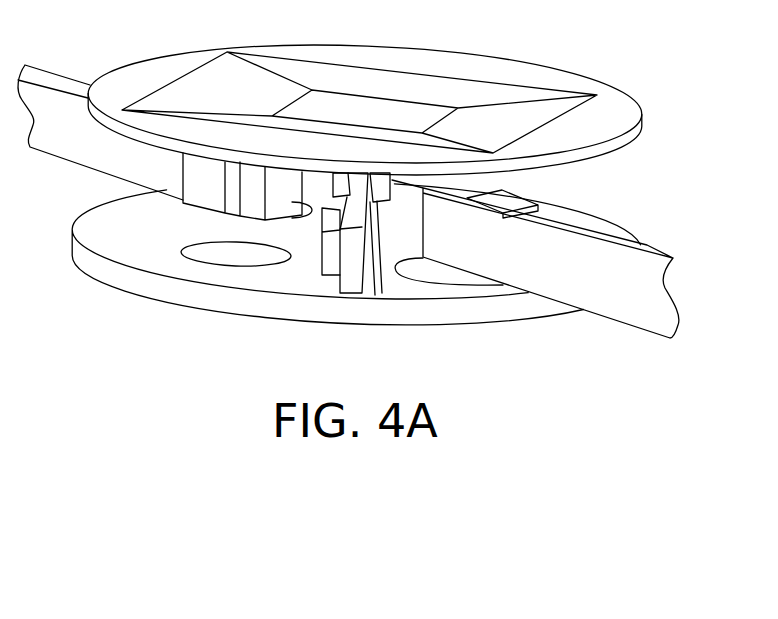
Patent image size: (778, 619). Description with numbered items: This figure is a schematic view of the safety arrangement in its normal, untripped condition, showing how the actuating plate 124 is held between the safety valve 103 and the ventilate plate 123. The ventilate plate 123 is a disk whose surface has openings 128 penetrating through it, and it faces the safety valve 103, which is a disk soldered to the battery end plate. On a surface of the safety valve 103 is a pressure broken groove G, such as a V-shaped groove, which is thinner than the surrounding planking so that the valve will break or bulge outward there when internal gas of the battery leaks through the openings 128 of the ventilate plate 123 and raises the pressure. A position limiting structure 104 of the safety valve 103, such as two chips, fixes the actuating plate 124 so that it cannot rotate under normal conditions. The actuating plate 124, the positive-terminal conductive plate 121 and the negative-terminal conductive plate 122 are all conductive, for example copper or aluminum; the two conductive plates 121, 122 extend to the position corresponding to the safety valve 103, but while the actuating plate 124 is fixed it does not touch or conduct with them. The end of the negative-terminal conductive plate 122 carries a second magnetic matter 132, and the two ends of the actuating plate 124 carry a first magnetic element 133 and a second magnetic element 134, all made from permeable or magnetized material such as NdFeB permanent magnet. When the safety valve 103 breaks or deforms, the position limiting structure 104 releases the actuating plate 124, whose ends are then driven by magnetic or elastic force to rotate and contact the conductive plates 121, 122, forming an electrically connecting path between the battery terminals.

The safety valve 103 is at (377, 114).
The position limiting structure 104 is at (338, 183).
The pressure broken groove G is at (503, 105).
The positive-terminal conductive plate 121 is at (70, 130).
The negative-terminal conductive plate 122 is at (617, 287).
The ventilate plate 123 is at (273, 282).
The actuating plate 124 is at (352, 280).
The openings 128 is at (237, 257).
The second magnetic matter 132 is at (511, 203).
The first magnetic element 133 is at (376, 194).
The second magnetic element 134 is at (329, 266).